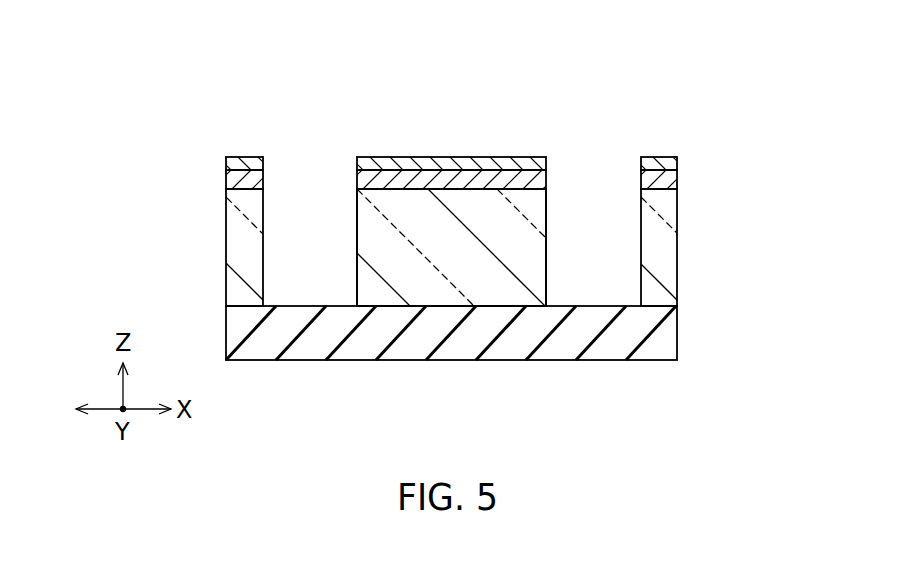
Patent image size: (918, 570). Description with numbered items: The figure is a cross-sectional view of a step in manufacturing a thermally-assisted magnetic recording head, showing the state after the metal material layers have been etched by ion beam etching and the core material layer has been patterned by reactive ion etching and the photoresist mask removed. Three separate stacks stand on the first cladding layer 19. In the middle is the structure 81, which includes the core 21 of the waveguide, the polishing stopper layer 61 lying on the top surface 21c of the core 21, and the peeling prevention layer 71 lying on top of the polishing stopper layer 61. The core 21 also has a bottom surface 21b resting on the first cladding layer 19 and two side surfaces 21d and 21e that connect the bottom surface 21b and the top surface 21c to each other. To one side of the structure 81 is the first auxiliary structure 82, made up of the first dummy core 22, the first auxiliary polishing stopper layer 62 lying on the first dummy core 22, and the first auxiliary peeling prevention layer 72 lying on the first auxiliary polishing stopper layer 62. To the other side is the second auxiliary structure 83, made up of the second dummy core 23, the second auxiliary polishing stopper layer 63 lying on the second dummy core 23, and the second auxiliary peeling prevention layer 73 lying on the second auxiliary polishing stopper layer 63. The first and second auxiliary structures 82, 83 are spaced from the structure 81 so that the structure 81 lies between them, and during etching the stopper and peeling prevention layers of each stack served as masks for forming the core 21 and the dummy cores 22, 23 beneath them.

The first cladding layer 19 is at (677, 328).
The core 21 is at (453, 256).
The bottom surface 21b is at (445, 306).
The top surface 21c is at (385, 188).
The side surface 21d is at (357, 219).
The side surface 21e is at (546, 220).
The first dummy core 22 is at (226, 221).
The second dummy core 23 is at (677, 222).
The polishing stopper layer 61 is at (477, 170).
The first auxiliary polishing stopper layer 62 is at (226, 180).
The second auxiliary polishing stopper layer 63 is at (677, 180).
The peeling prevention layer 71 is at (433, 80).
The first auxiliary peeling prevention layer 72 is at (211, 155).
The second auxiliary peeling prevention layer 73 is at (692, 157).
The structure 81 is at (453, 231).
The first auxiliary structure 82 is at (181, 223).
The second auxiliary structure 83 is at (718, 224).